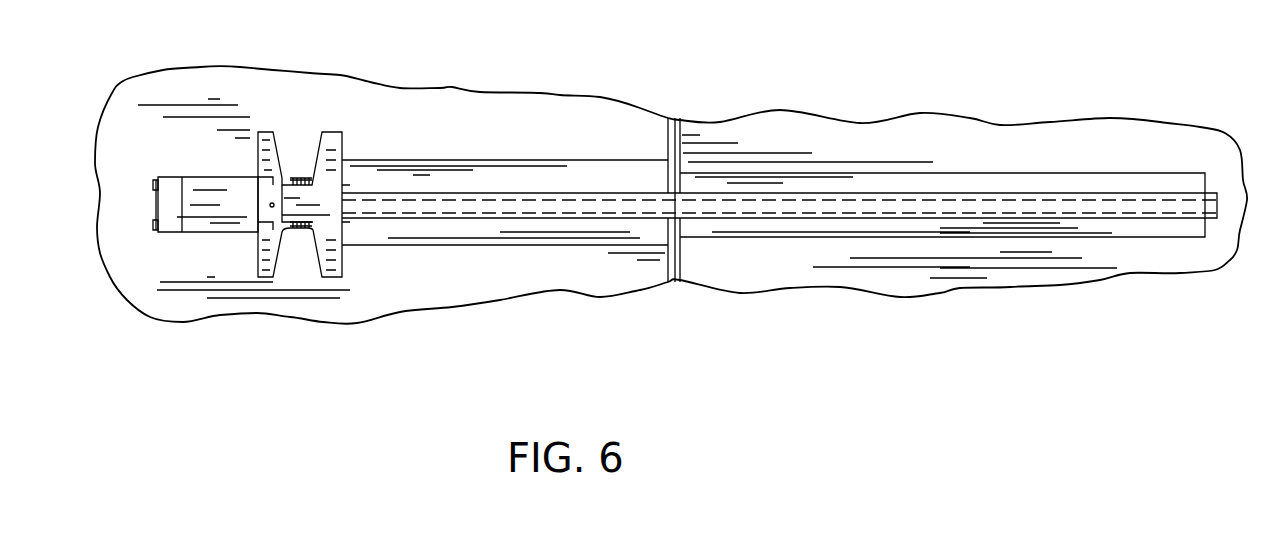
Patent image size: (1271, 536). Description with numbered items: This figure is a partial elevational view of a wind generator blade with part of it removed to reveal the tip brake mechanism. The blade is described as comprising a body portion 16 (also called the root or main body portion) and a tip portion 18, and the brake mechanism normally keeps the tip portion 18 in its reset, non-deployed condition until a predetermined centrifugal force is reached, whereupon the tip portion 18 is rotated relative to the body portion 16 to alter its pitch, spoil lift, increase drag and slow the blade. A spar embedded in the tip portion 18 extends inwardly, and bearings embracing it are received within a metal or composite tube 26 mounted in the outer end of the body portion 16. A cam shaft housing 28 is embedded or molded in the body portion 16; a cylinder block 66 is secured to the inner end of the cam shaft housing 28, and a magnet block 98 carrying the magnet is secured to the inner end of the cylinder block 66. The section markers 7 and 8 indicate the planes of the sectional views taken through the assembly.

The body portion 16 is at (138, 282).
The tip portion 18 is at (1010, 152).
The tube 26 is at (520, 195).
The cam shaft housing 28 is at (285, 182).
The cylinder block 66 is at (210, 175).
The magnet block 98 is at (157, 205).
The section line 7- 7 is at (470, 358).
The section line 8- 8 is at (800, 343).